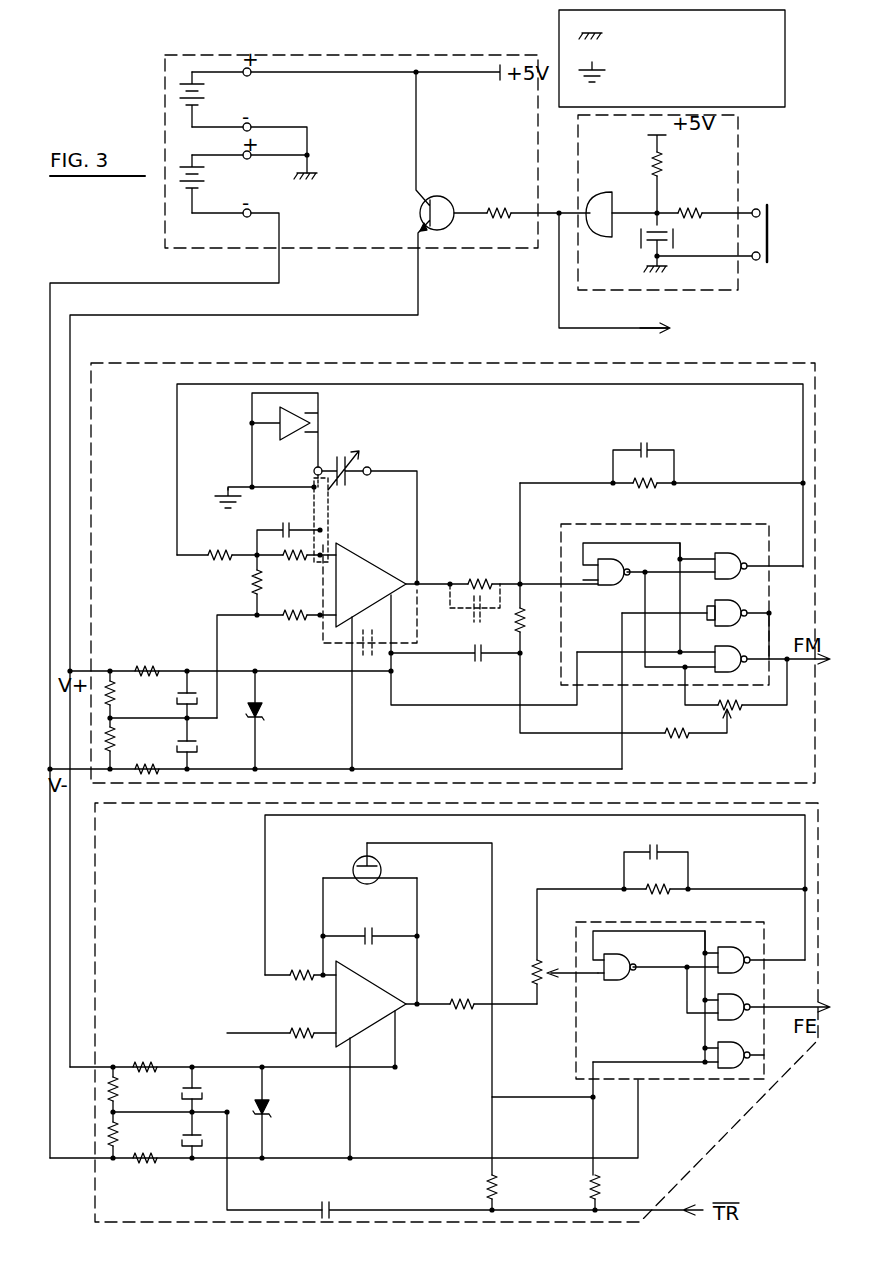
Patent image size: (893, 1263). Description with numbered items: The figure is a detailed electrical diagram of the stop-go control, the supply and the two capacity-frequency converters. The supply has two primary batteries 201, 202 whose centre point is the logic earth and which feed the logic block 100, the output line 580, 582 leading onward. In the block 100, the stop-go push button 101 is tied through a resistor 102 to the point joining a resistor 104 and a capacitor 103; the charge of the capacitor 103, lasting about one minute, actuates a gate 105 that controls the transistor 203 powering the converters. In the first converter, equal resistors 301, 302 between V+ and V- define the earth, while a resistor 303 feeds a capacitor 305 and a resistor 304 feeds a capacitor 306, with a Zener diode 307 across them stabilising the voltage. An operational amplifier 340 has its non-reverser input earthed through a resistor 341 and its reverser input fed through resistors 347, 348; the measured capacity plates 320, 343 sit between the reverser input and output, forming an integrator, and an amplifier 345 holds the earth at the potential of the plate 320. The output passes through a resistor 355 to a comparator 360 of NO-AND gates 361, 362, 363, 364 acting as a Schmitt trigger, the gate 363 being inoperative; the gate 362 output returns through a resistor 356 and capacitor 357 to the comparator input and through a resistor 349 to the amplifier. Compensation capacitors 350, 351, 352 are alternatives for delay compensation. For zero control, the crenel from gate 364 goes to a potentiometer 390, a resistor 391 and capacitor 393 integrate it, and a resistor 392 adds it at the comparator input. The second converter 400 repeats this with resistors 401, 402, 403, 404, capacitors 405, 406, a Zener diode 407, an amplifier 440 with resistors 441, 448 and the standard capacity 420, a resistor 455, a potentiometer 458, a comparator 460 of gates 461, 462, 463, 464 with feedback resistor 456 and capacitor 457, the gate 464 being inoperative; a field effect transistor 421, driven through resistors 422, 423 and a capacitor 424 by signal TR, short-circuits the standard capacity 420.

The block 100 is at (738, 148).
The stop-go push button 101 is at (768, 210).
The resistor 102 is at (690, 207).
The capacitor 103 is at (673, 240).
The resistor 104 is at (664, 164).
The gate 105 is at (598, 238).
The primary battery 201 is at (210, 100).
The primary battery 202 is at (210, 185).
The transistor 203 is at (448, 204).
The resistor 301 is at (116, 693).
The resistor 302 is at (116, 740).
The resistor 303 is at (147, 665).
The resistor 304 is at (152, 775).
The capacitor 305 is at (198, 700).
The capacitor 306 is at (198, 744).
The Zener diode 307 is at (264, 713).
The plate of the capacity to be measured 320 is at (321, 478).
The operational amplifier 340 is at (368, 548).
The resistor 341 is at (296, 622).
The plate of the capacity to be measured 343 is at (357, 456).
The operational amplifier 345 is at (290, 440).
The resistor 347 is at (254, 590).
The resistor 348 is at (292, 562).
The resistor 349 is at (215, 562).
The capacitor 350 is at (284, 522).
The capacitor 351 is at (474, 612).
The capacitor 352 is at (370, 660).
The resistor 355 is at (478, 578).
The resistor 356 is at (645, 490).
The capacitor 357 is at (648, 444).
The comparator connection 360 is at (730, 524).
The NO-AND gate 361 is at (612, 585).
The NO-AND gate 362 is at (738, 553).
The NO-AND gate 363 is at (735, 600).
The NO-AND gate 364 is at (735, 646).
The potentiometer 390 is at (735, 712).
The resistor 391 is at (678, 740).
The resistor 392 is at (524, 625).
The capacitor 393 is at (470, 660).
The capacity-frequency converter 400 is at (95, 865).
The resistor 401 is at (119, 1090).
The resistor 402 is at (119, 1135).
The resistor 403 is at (145, 1061).
The resistor 404 is at (150, 1164).
The capacitor 405 is at (203, 1095).
The capacitor 406 is at (200, 1146).
The Zener diode 407 is at (270, 1110).
The standard capacity 420 is at (368, 925).
The field effect transistor 421 is at (355, 858).
The resistor 422 is at (601, 1185).
The resistor 423 is at (498, 1185).
The capacitor 424 is at (330, 1202).
The operational amplifier 440 is at (385, 980).
The resistor 441 is at (300, 1026).
The resistor 448 is at (298, 968).
The resistor 455 is at (465, 997).
The resistor 456 is at (658, 896).
The capacitor 457 is at (658, 846).
The potentiometer 458 is at (532, 968).
The comparator circuit 460 is at (730, 922).
The NO-AND gate 461 is at (620, 955).
The NO-AND gate 462 is at (740, 947).
The NO-AND gate 463 is at (738, 994).
The NO-AND gate 464 is at (732, 1030).
The output line 580 is at (662, 273).
The output line to fig. 4 582 is at (718, 338).